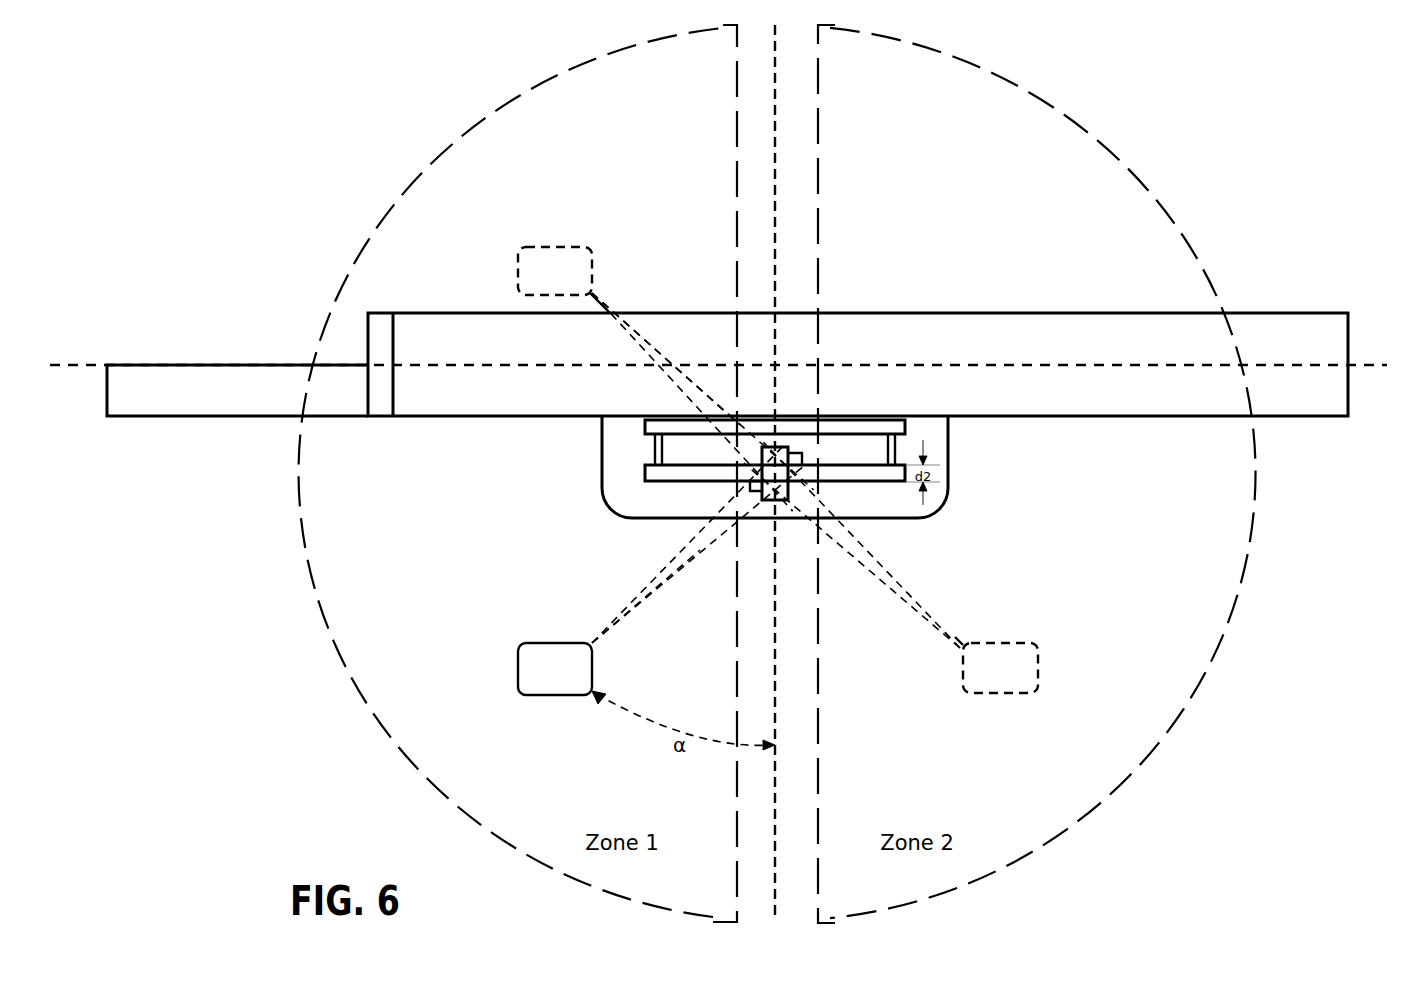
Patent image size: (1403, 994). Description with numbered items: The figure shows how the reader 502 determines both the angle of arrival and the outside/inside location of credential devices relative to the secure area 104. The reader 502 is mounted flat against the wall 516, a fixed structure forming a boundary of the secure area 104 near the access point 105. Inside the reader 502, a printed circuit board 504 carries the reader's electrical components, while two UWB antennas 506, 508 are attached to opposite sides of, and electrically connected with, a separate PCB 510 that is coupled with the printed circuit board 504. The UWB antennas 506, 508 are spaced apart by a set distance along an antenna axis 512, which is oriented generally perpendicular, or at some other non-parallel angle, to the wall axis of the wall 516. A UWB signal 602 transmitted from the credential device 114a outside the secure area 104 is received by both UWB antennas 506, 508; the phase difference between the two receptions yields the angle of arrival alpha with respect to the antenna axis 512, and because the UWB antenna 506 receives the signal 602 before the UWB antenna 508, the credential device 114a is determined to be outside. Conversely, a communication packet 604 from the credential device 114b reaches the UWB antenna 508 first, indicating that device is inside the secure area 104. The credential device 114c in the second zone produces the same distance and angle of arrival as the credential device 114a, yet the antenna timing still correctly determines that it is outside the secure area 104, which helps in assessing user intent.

The secure area 104 is at (777, 474).
The access point 105 is at (228, 416).
The credential device 114a is at (662, 568).
The credential device 114b is at (666, 379).
The credential device 114c is at (891, 567).
The reader 502 is at (928, 522).
The printed circuit board 504 is at (643, 428).
The UWB antenna 506 is at (761, 500).
The UWB antenna 508 is at (790, 447).
The PCB 510 is at (643, 475).
The antenna axis 512 is at (776, 193).
The wall 516 is at (1198, 366).
The UWB signal 602 is at (624, 620).
The communication packet 604 is at (610, 313).